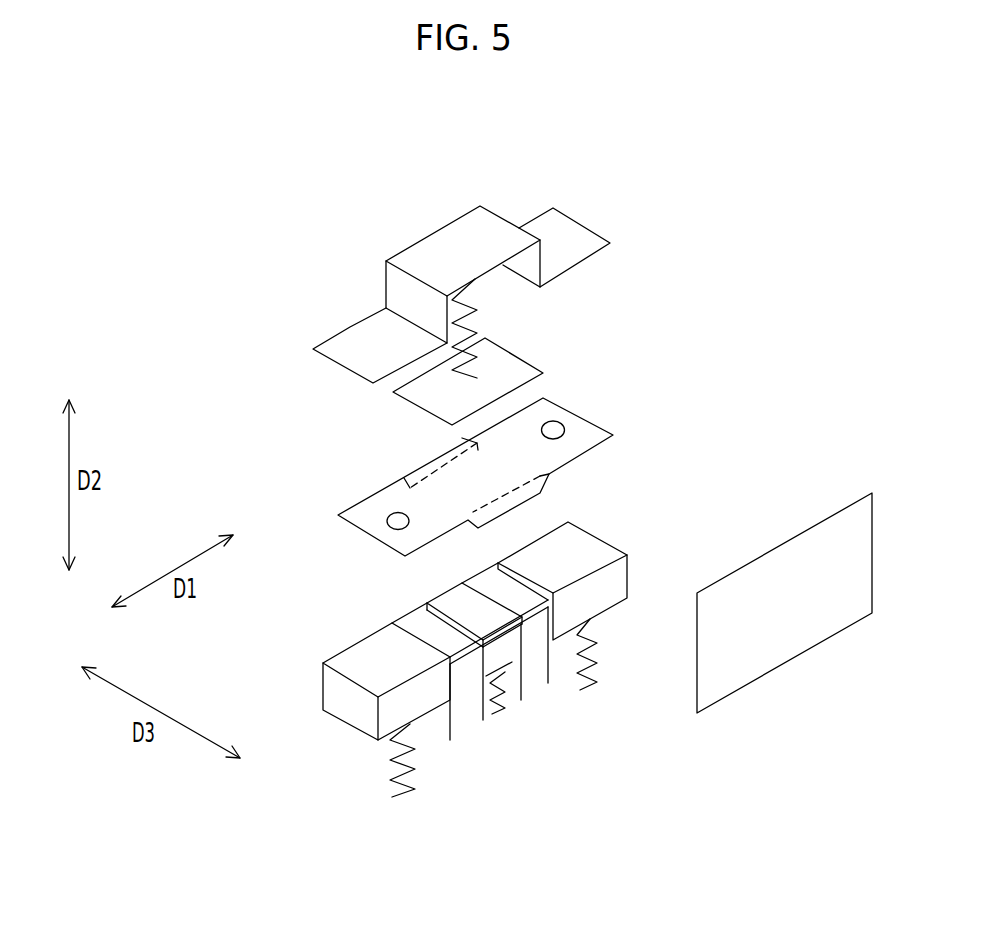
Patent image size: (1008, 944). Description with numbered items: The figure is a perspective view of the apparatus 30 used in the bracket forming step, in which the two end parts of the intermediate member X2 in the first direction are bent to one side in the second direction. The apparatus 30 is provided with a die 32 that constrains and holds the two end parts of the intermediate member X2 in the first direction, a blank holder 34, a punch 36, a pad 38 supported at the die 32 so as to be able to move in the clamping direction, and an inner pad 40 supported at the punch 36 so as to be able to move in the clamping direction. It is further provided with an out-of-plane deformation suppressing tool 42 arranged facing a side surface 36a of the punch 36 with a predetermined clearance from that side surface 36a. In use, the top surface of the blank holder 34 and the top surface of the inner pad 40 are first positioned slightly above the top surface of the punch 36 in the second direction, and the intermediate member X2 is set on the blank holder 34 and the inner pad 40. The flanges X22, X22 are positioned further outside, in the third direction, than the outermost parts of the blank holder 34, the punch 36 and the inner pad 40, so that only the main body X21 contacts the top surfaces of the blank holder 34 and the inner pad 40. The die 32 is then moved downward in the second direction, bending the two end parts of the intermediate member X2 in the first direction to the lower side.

The apparatus 30 is at (643, 276).
The die 32 is at (350, 327).
The blank holder 34 is at (348, 727).
The punch 36 is at (420, 620).
The side surface 36a is at (533, 653).
The pad 38 is at (517, 353).
The inner pad 40 is at (460, 592).
The out-of-plane deformation suppressing tool 42 is at (822, 520).
The intermediate member X2 is at (683, 342).
The main body X21 is at (565, 422).
The flange X22 is at (462, 438).